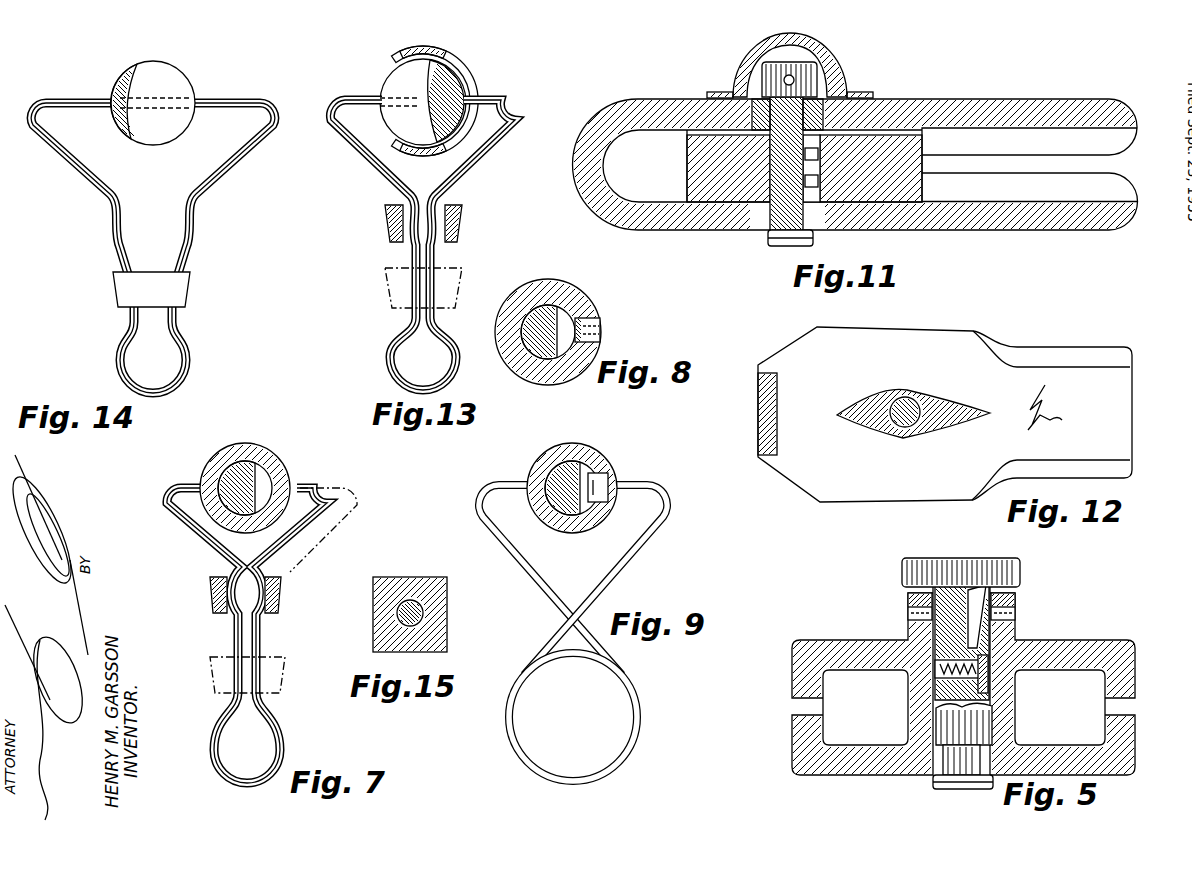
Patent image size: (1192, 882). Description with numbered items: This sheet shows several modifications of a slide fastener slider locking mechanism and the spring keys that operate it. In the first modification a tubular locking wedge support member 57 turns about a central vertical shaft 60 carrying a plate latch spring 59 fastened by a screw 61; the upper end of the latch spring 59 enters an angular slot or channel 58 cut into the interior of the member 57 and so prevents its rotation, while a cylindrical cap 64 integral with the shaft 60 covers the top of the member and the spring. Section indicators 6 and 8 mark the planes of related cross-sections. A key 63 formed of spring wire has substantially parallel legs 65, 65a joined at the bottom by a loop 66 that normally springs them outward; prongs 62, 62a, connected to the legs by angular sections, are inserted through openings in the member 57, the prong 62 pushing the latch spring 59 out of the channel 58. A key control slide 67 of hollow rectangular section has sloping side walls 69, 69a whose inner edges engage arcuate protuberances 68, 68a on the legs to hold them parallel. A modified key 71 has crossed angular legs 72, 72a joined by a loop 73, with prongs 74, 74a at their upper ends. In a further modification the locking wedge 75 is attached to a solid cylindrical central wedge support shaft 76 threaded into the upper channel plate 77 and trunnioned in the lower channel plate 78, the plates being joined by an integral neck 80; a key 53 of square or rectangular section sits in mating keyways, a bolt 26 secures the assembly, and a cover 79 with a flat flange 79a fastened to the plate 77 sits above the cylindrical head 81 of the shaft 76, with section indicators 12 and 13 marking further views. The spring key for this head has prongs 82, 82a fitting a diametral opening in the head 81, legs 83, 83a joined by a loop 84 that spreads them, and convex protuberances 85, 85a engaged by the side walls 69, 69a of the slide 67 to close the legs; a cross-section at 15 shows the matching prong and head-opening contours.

In FIG. 14, the cylindrical head 81 is at (177, 66).
In FIG. 13, the cylindrical head 81 is at (390, 63).
In FIG. 11, the cylindrical head 81 is at (806, 62).
In FIG. 15, the cylindrical head 81 is at (410, 577).
In FIG. 14, the key prong 82 is at (90, 98).
In FIG. 13, the key prong 82 is at (362, 92).
In FIG. 15, the key prong 82 is at (397, 613).
In FIG. 14, the key prong 82a is at (230, 96).
In FIG. 13, the key prong 82a is at (458, 78).
In FIG. 14, the key leg 83 is at (118, 254).
In FIG. 13, the key leg 83 is at (408, 257).
In FIG. 14, the key leg 83a is at (190, 254).
In FIG. 13, the key leg 83a is at (440, 257).
In FIG. 14, the loop 84 is at (153, 349).
In FIG. 13, the loop 84 is at (390, 352).
In FIG. 14, the key control slide 67 is at (152, 272).
In FIG. 7, the key control slide 67 is at (228, 570).
In FIG. 13, the cover 79 is at (428, 150).
In FIG. 11, the cover 79 is at (843, 37).
In FIG. 11, the flat flange 79a is at (727, 84).
In FIG. 13, the sloping side wall 69 is at (385, 210).
In FIG. 7, the sloping side wall 69 is at (210, 592).
In FIG. 13, the sloping side wall 69a is at (462, 210).
In FIG. 7, the sloping side wall 69a is at (281, 583).
In FIG. 13, the convex protuberance 85 is at (390, 230).
In FIG. 13, the convex protuberance 85a is at (458, 232).
In FIG. 8, the central vertical shaft 60 is at (539, 305).
In FIG. 5, the central vertical shaft 60 is at (990, 722).
In FIG. 8, the plate latch spring 59 is at (600, 324).
In FIG. 5, the plate latch spring 59 is at (972, 580).
In FIG. 11, the neck 80 is at (601, 112).
In FIG. 12, the neck 80 is at (780, 401).
In FIG. 11, the bolt 26 is at (733, 55).
In FIG. 11, the locking wedge 75 is at (687, 163).
In FIG. 12, the locking wedge 75 is at (883, 428).
In FIG. 11, the key 53 is at (824, 164).
In FIG. 11, the central wedge support shaft 76 is at (828, 129).
In FIG. 12, the central wedge support shaft 76 is at (918, 397).
In FIG. 11, the upper channel plate 77 is at (975, 99).
In FIG. 11, the lower channel plate 78 is at (1027, 231).
In FIG. 12, the lower channel plate 78 is at (1133, 422).
In FIG. 5, the tubular locking wedge support member 57 is at (908, 628).
In FIG. 7, the tubular locking wedge support member 57 is at (246, 444).
In FIG. 7, the angular slot or channel 58 is at (272, 468).
In FIG. 7, the key prong 62 is at (297, 481).
In FIG. 7, the key prong 62a is at (205, 483).
In FIG. 7, the arcuate protuberance 68 is at (218, 606).
In FIG. 7, the arcuate protuberance 68a is at (265, 605).
In FIG. 7, the key leg 65 is at (238, 638).
In FIG. 7, the key leg 65a is at (258, 633).
In FIG. 7, the key 63 is at (270, 724).
In FIG. 7, the loop 66 is at (220, 771).
In FIG. 5, the cap 64 is at (1015, 566).
In FIG. 5, the screw 61 is at (987, 673).
In FIG. 9, the key prong 74 is at (524, 482).
In FIG. 9, the key prong 74a is at (620, 482).
In FIG. 9, the crossed angular leg 72 is at (527, 591).
In FIG. 9, the crossed angular leg 72a is at (608, 574).
In FIG. 9, the loop 73 is at (643, 718).
In FIG. 9, the key 71 is at (554, 782).
In FIG. 13, the section line 15 is at (497, 63).
In FIG. 13, the section line 12 is at (548, 193).
In FIG. 11, the section line 12 is at (1138, 191).
In FIG. 11, the section line 13 is at (769, 77).
In FIG. 7, the section line 6 is at (173, 488).
In FIG. 5, the section line 8 is at (895, 586).